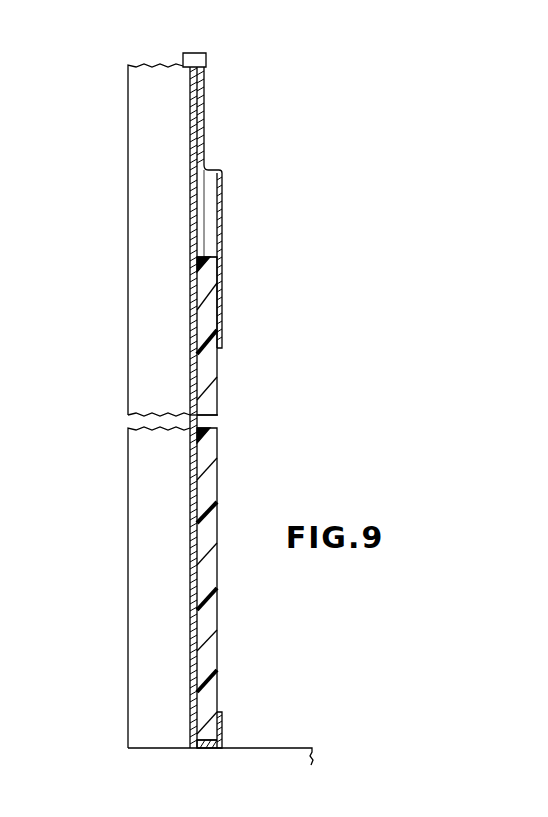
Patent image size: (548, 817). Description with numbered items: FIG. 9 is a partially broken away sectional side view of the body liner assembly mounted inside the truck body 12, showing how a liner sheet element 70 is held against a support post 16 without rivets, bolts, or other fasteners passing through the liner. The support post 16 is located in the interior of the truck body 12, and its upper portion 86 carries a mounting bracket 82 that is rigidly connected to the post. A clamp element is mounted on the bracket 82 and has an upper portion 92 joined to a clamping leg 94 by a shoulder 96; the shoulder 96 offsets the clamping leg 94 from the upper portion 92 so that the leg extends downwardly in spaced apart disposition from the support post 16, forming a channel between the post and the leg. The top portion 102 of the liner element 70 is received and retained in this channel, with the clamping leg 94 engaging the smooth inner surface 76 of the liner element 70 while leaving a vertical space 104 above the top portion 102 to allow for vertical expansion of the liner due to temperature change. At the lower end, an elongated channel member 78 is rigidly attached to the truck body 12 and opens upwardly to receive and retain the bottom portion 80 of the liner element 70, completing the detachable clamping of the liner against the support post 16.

The truck body 12 is at (287, 753).
The support post 16 is at (148, 667).
The liner sheet element 70 is at (206, 455).
The smooth inner surface 76 is at (216, 395).
The channel member 78 is at (224, 722).
The bottom portion 80 is at (208, 731).
The mounting bracket 82 is at (193, 187).
The upper portion 86 is at (165, 85).
The upper portion 92 is at (208, 81).
The clamping leg 94 is at (223, 233).
The shoulder 96 is at (210, 168).
The top portion 102 is at (210, 297).
The vertical space 104 is at (210, 200).